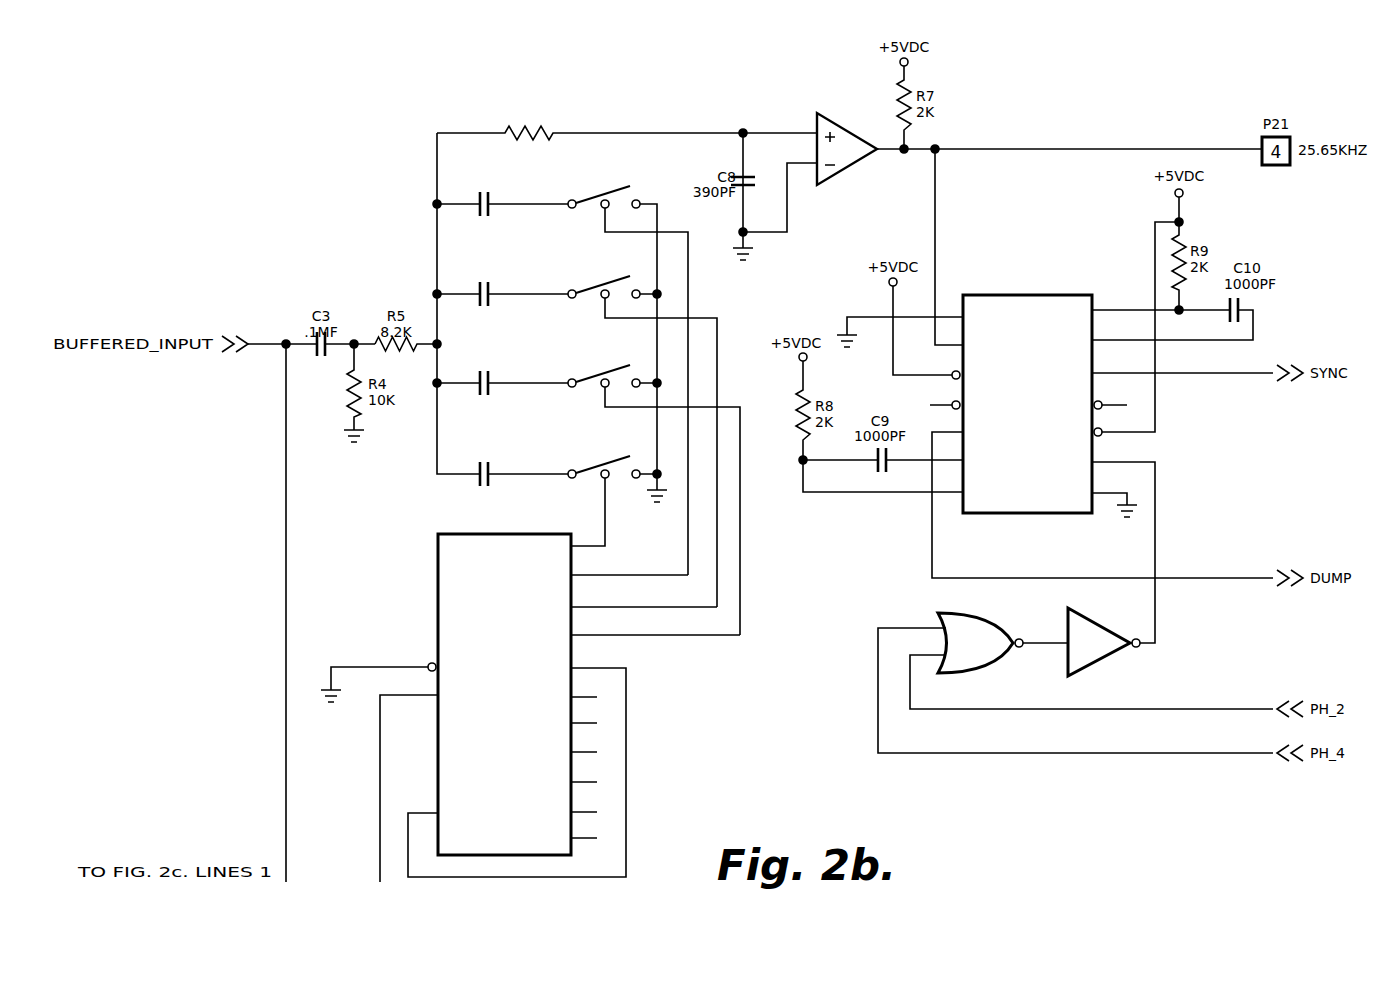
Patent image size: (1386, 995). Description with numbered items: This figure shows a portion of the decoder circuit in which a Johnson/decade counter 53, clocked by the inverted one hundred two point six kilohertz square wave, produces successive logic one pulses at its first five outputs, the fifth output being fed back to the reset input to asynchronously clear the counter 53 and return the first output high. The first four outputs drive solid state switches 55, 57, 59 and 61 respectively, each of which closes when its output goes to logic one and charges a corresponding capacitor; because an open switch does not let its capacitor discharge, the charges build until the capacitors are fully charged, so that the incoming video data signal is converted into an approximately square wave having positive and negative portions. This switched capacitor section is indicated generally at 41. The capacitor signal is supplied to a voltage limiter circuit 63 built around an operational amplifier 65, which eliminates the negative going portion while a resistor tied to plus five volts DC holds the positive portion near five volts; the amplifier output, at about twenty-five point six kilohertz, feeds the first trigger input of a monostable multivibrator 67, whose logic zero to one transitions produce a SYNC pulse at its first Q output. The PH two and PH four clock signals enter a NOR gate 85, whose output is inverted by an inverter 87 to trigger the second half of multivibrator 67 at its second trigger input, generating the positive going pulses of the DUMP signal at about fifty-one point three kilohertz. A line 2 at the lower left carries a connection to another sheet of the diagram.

The switched capacitor filter network 41 is at (332, 158).
The Johnson/decade counter 53 is at (438, 562).
The solid state switch 55 is at (632, 426).
The solid state switch 57 is at (637, 335).
The solid state switch 59 is at (643, 248).
The solid state switch 61 is at (622, 186).
The voltage limiter circuit 63 is at (852, 178).
The operational amplifier 65 is at (872, 98).
The monostable multivibrator 67 is at (1045, 295).
The NOR gate 85 is at (976, 614).
The inverter 87 is at (1078, 612).
The line 2 is at (399, 790).